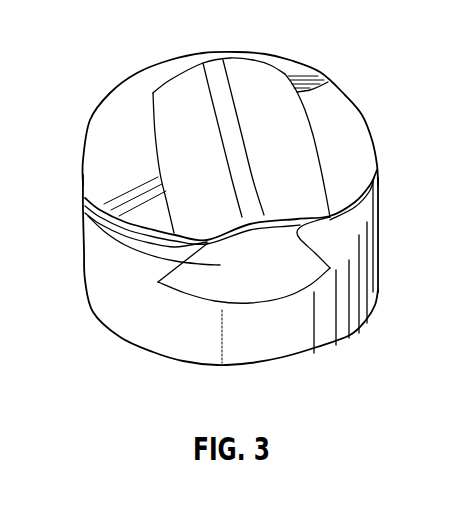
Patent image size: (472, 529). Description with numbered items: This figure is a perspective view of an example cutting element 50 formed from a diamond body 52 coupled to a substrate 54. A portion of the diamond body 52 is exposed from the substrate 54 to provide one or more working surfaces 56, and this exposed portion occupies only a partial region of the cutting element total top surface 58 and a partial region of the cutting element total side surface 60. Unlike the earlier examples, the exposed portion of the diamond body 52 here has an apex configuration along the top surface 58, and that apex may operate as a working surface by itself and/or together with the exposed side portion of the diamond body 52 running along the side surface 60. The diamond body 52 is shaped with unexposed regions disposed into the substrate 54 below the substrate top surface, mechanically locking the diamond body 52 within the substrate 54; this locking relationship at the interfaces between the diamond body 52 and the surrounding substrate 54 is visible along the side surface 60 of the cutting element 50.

The cutting element 50 is at (243, 195).
The diamond body 52 is at (288, 132).
The substrate 54 is at (334, 302).
The working surface 56 is at (250, 183).
The top surface 58 is at (130, 95).
The side surface 60 is at (120, 300).